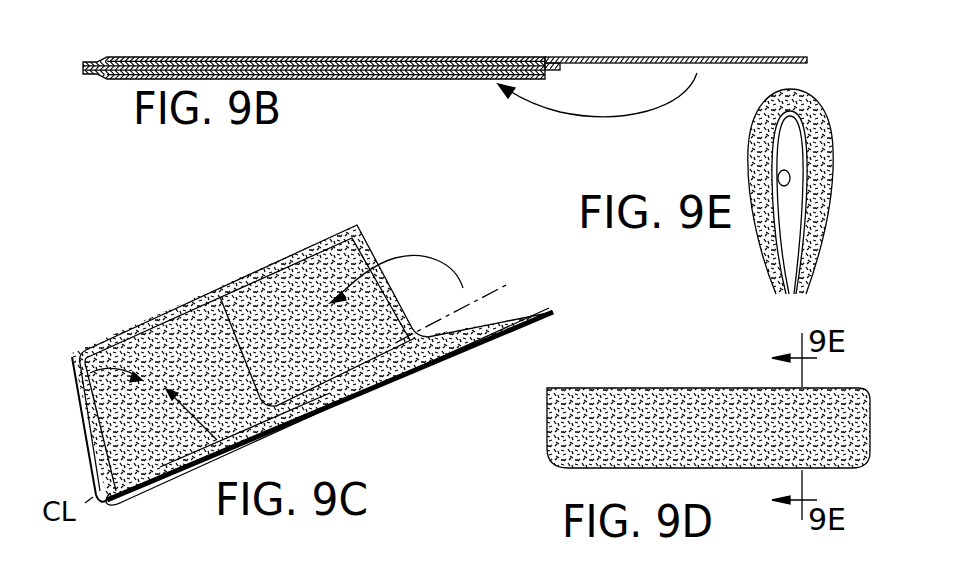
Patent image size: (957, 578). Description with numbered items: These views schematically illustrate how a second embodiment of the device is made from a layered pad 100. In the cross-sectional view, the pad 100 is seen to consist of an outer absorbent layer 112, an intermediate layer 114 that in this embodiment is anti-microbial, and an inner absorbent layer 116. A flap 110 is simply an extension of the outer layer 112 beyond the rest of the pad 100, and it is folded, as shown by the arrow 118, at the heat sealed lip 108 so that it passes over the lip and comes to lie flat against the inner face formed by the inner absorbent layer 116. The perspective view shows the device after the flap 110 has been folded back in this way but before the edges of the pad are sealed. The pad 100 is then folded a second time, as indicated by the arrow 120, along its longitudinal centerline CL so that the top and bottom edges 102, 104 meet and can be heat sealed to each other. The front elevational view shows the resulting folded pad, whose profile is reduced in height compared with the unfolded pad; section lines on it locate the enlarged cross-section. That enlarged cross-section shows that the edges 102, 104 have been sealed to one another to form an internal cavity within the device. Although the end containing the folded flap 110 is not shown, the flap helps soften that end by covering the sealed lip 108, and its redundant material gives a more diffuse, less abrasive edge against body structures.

In FIG. 9B, the pad 100 is at (145, 50).
In FIG. 9E, the top edge 102 is at (778, 296).
In FIG. 9C, the top edge 102 is at (318, 413).
In FIG. 9E, the bottom edge 104 is at (804, 296).
In FIG. 9C, the bottom edge 104 is at (188, 300).
In FIG. 9B, the heat sealed lip 108 is at (547, 72).
In FIG. 9B, the flap 110 is at (760, 57).
In FIG. 9E, the flap 110 is at (783, 173).
In FIG. 9B, the outer absorbent layer 112 is at (334, 57).
In FIG. 9B, the intermediate layer 114 is at (390, 67).
In FIG. 9B, the inner absorbent layer 116 is at (300, 79).
In FIG. 9B, the arrow 118 is at (537, 110).
In FIG. 9C, the arrow 118 is at (417, 258).
In FIG. 9C, the arrow 120 is at (117, 370).